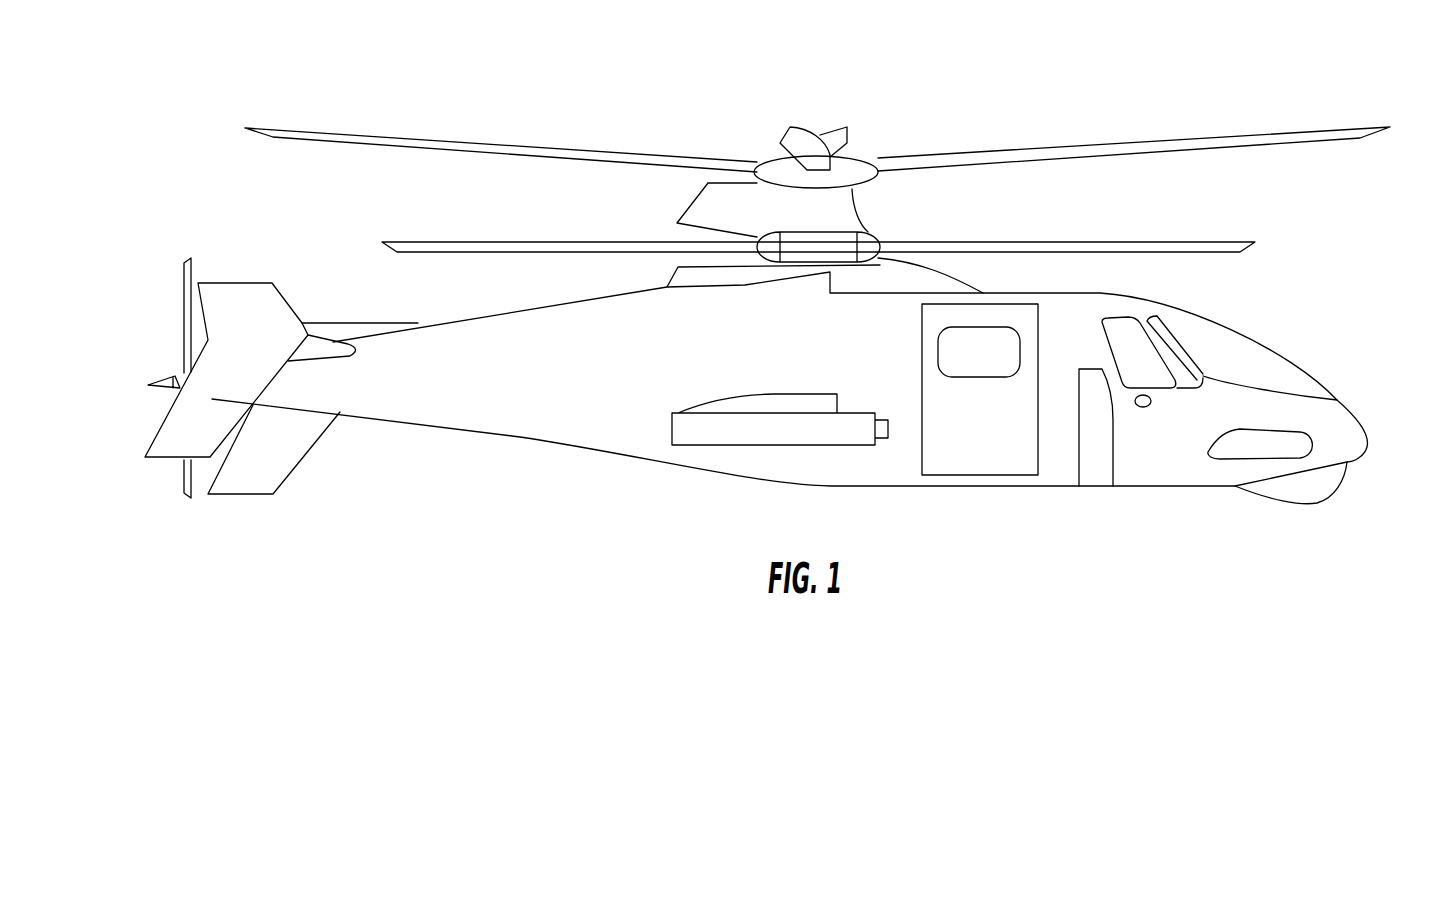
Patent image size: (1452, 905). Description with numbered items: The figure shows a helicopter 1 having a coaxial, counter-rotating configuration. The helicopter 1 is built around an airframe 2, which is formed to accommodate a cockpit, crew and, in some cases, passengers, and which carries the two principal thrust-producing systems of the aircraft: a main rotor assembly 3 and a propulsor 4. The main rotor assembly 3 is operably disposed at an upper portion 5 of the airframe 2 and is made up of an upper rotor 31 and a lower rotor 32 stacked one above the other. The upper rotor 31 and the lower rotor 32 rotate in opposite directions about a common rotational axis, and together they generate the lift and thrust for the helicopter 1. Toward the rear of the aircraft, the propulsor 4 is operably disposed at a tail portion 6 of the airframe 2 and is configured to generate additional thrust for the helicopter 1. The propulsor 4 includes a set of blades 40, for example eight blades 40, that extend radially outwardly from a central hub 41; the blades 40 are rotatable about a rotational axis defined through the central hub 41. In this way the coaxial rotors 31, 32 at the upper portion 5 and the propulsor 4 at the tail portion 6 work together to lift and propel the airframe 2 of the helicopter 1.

The helicopter 1 is at (1352, 466).
The airframe 2 is at (1097, 458).
The main rotor assembly 3 is at (858, 170).
The upper rotor 31 is at (272, 132).
The lower rotor 32 is at (420, 248).
The propulsor 4 is at (180, 382).
The blades 40 is at (190, 270).
The central hub 41 is at (160, 387).
The upper portion 5 is at (797, 293).
The tail portion 6 is at (347, 377).